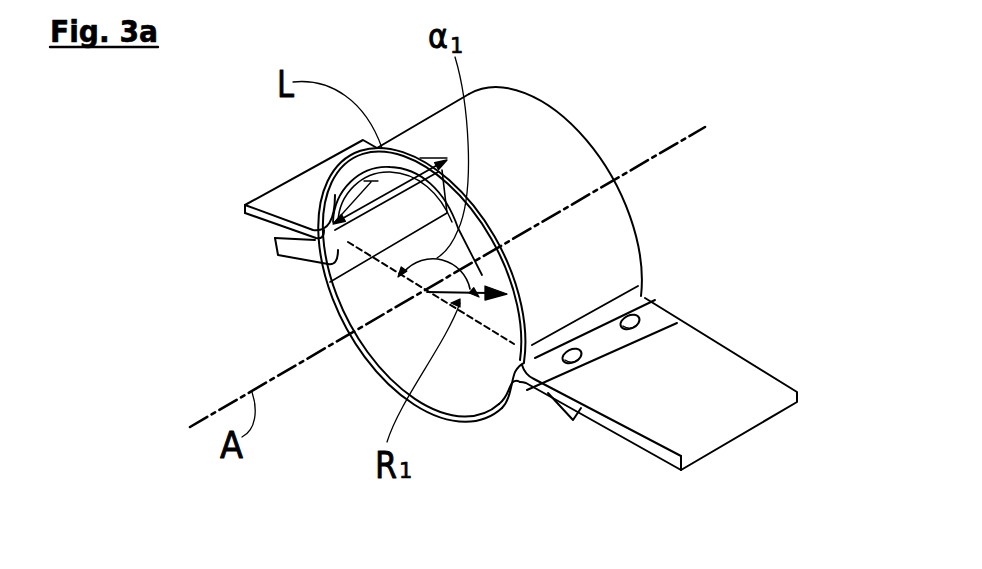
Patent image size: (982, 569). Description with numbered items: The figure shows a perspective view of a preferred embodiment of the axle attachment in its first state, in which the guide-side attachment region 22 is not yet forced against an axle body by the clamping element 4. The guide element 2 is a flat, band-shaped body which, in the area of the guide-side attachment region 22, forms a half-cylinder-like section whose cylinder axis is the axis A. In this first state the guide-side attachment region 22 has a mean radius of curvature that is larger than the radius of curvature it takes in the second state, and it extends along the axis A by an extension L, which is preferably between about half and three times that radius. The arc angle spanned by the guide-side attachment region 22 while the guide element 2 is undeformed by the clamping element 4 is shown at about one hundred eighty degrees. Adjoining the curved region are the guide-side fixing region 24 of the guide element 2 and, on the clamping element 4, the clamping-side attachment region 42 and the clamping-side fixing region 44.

The guide element 2 is at (546, 103).
The clamping element 4 is at (382, 369).
The guide-side attachment region 22 is at (330, 286).
The guide-side fixing region 24 is at (647, 310).
The clamping-side attachment region 42 is at (462, 376).
The clamping-side fixing region 44 is at (547, 398).